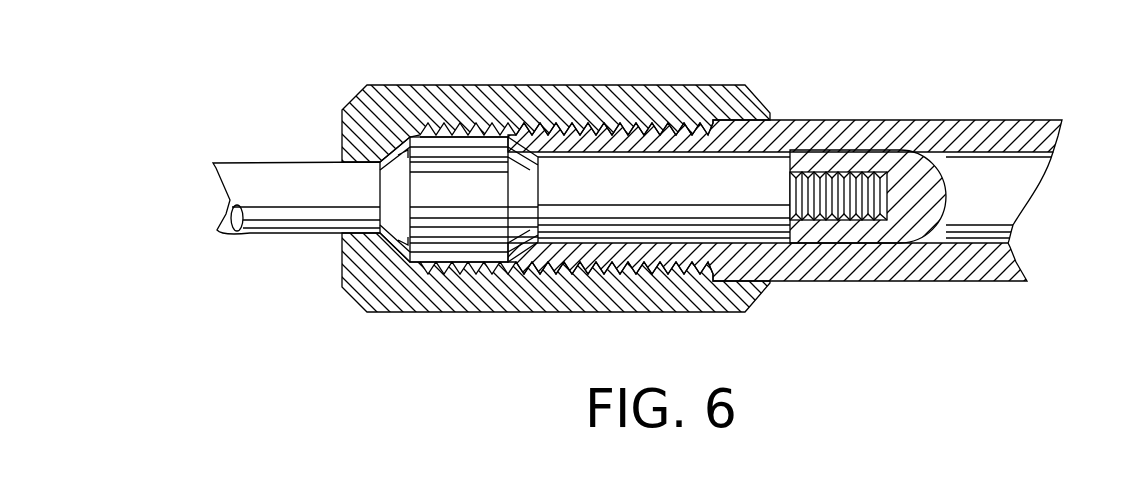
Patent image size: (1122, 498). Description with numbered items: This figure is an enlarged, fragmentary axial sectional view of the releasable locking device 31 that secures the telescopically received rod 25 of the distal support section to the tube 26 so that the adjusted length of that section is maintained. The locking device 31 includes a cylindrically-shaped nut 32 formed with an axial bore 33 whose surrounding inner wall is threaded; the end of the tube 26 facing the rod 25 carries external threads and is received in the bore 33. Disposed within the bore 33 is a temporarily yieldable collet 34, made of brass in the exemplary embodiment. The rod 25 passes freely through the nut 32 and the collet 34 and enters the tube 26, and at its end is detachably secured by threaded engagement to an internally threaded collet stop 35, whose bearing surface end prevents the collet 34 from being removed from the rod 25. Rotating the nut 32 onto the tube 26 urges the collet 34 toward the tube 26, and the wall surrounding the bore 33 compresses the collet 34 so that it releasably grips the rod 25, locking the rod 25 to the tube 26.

The rod 25 is at (313, 178).
The tube 26 is at (958, 130).
The releasable locking device 31 is at (725, 66).
The nut 32 is at (418, 100).
The axial bore 33 is at (570, 128).
The collet 34 is at (452, 267).
The collet stop 35 is at (833, 242).